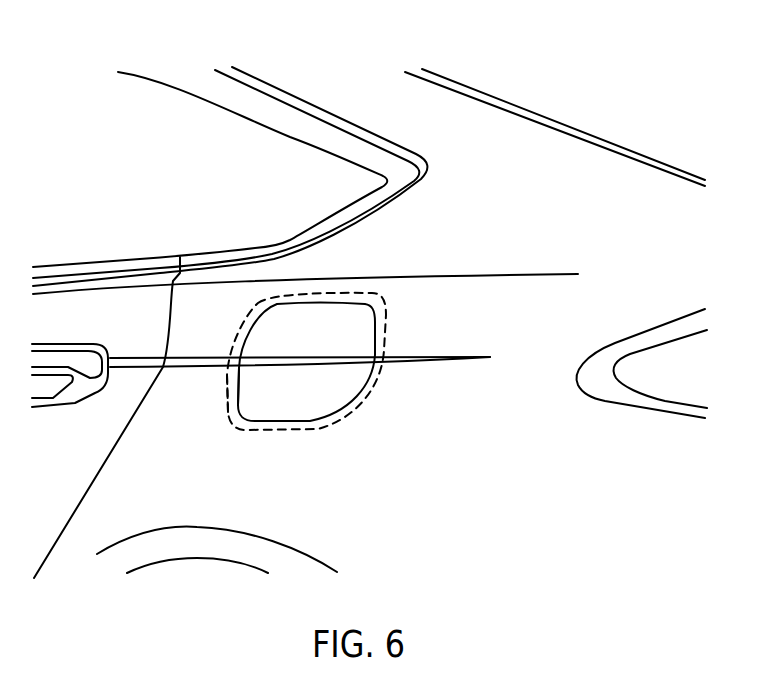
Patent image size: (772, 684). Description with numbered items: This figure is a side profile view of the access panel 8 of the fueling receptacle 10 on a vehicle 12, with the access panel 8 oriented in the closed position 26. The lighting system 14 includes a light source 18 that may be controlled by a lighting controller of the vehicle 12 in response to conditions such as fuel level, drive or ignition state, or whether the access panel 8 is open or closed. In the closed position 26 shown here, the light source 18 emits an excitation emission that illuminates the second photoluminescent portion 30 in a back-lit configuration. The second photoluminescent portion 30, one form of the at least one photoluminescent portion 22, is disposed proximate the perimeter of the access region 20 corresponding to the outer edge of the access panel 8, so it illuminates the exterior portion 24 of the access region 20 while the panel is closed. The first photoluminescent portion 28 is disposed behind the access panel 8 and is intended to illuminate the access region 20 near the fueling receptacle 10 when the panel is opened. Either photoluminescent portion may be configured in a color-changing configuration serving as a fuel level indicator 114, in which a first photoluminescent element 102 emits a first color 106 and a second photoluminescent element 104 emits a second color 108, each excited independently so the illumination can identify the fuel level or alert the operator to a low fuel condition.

The access panel 8 is at (261, 381).
The fueling receptacle 10 is at (307, 351).
The vehicle 12 is at (543, 57).
The lighting system 14 is at (305, 325).
The light source 18 is at (267, 296).
The access region 20 is at (368, 393).
The photoluminescent portion 22 is at (201, 421).
The exterior portion 24 is at (287, 443).
The closed position 26 is at (307, 351).
The first photoluminescent portion 28 is at (320, 358).
The second photoluminescent portion 30 is at (238, 398).
The first photoluminescent element 102 is at (252, 356).
The second photoluminescent element 104 is at (252, 356).
The first color 106 is at (252, 356).
The second color 108 is at (265, 375).
The fuel level indicator 114 is at (435, 208).